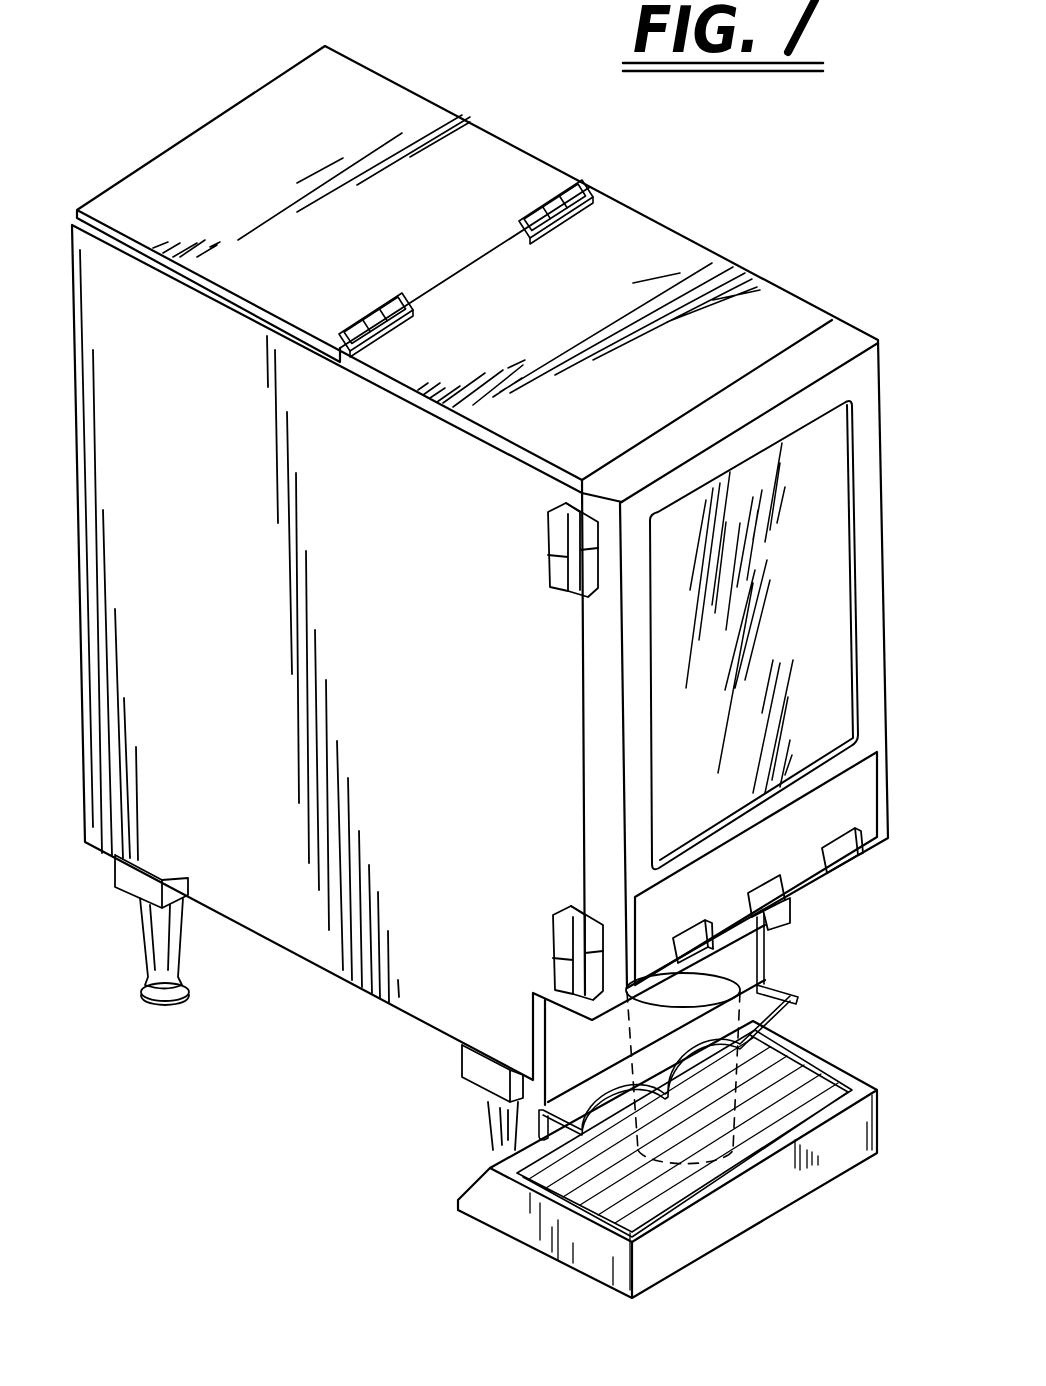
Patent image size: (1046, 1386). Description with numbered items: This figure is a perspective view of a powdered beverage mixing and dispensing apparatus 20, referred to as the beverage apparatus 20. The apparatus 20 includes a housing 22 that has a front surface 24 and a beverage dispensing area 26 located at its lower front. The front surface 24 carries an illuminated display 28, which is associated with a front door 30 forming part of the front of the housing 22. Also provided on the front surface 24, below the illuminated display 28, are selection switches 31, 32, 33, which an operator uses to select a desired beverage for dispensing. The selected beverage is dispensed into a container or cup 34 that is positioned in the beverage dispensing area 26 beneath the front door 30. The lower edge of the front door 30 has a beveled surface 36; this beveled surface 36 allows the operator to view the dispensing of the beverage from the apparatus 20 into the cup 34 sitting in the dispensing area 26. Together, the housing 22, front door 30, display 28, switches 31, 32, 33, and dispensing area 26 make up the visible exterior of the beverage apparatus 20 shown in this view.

The powdered beverage mixing and dispensing apparatus 20 is at (158, 117).
The housing 22 is at (70, 372).
The front surface 24 is at (872, 543).
The beverage dispensing area 26 is at (830, 1025).
The illuminated display 28 is at (826, 670).
The front door 30 is at (859, 330).
The selection switch 31 is at (693, 940).
The selection switch 32 is at (773, 893).
The selection switch 33 is at (842, 852).
The cup 34 is at (703, 1143).
The beveled surface 36 is at (608, 1018).